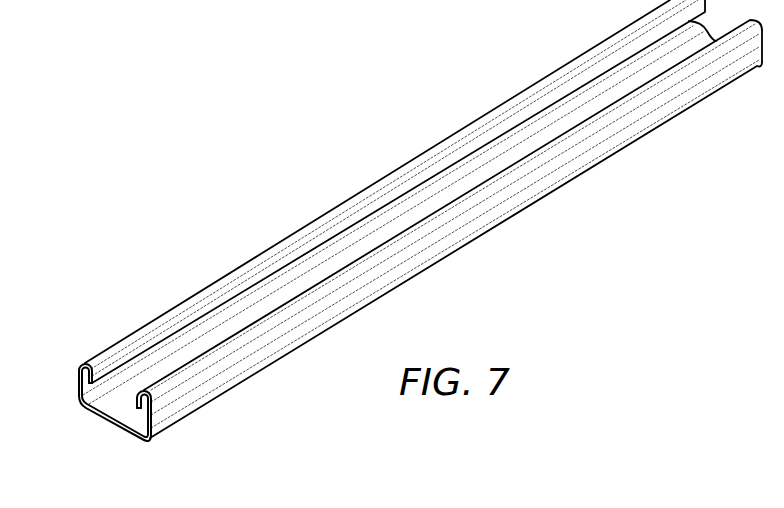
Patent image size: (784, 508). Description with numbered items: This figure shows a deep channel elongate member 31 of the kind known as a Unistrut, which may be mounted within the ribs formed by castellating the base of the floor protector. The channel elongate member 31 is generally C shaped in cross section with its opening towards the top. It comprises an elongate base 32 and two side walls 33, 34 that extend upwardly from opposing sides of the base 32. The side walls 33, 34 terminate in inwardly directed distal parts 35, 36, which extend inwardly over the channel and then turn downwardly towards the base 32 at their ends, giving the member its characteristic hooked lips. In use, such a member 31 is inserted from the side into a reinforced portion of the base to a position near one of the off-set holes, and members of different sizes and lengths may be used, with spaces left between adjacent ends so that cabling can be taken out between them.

The channel elongate member 31 is at (394, 254).
The elongate base 32 is at (107, 421).
The side wall 33 is at (79, 372).
The side wall 34 is at (160, 415).
The inwardly directed distal part 35 is at (99, 356).
The inwardly directed distal part 36 is at (166, 379).